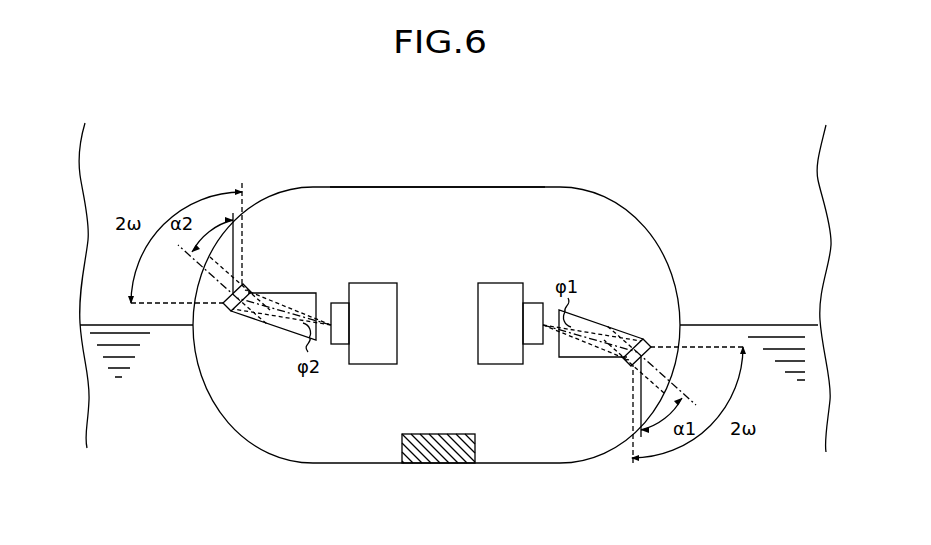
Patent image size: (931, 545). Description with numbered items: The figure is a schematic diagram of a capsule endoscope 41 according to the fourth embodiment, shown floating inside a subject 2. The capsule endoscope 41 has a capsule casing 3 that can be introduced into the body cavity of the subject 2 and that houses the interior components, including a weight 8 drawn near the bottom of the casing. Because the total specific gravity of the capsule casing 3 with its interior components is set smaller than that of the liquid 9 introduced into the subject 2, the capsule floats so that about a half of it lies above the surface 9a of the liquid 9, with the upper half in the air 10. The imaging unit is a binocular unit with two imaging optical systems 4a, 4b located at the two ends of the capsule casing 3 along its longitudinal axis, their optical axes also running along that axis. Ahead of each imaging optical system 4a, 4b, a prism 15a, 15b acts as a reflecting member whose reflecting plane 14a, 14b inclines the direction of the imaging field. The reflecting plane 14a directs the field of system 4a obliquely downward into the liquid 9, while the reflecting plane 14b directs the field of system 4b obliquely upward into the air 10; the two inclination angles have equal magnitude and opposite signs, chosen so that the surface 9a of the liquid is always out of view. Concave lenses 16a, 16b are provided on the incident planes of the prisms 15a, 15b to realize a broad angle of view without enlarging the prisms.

The subject 2 is at (79, 143).
The air 10 is at (88, 214).
The liquid 9 is at (92, 393).
The surface of the liquid 9a is at (95, 323).
The capsule casing 3 is at (398, 185).
The capsule endoscope 41 is at (469, 185).
The weight 8 is at (436, 464).
The imaging optical system 4a is at (510, 280).
The imaging optical system 4b is at (362, 280).
The reflecting plane 14a is at (592, 318).
The reflecting plane 14b is at (283, 333).
The prism 15a is at (587, 352).
The prism 15b is at (292, 303).
The concave lens 16a is at (651, 349).
The concave lens 16b is at (222, 301).